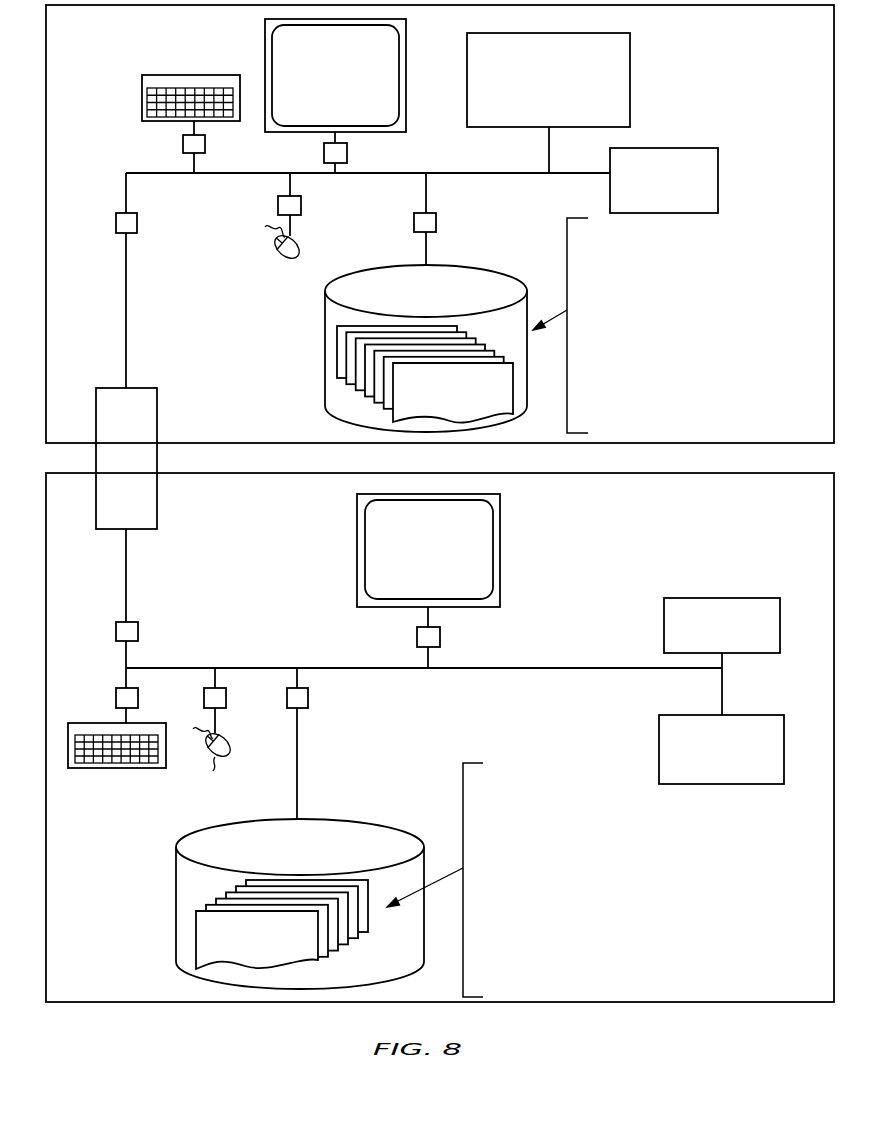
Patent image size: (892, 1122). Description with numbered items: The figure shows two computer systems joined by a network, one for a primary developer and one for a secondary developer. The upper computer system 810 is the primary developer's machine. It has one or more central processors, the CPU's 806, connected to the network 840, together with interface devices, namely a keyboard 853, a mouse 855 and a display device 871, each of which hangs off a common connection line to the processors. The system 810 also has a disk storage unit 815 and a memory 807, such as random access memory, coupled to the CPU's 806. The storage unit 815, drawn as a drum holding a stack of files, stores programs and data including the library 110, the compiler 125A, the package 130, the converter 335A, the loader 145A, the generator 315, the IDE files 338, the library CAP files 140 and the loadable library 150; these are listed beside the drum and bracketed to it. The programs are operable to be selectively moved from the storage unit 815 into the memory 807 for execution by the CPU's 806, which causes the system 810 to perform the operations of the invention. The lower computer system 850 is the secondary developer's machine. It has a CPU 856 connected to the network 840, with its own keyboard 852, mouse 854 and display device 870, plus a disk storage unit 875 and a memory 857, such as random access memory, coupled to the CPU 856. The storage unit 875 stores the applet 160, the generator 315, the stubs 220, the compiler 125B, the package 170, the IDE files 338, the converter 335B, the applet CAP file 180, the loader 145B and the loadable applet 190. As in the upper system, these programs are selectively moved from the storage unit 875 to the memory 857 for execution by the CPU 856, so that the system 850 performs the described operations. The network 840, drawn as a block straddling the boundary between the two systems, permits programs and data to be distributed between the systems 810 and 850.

The computer system 810 is at (800, 60).
The display device 871 is at (265, 40).
The keyboard 853 is at (137, 98).
The mouse 855 is at (255, 218).
The disk storage unit 815 is at (445, 278).
The central processors 806 is at (632, 82).
The memory 807 is at (678, 202).
The library 110 is at (629, 231).
The compiler 125A is at (642, 255).
The package 130 is at (633, 279).
The converter 335A is at (651, 302).
The loader 145A is at (633, 326).
The generator 315 is at (592, 574).
The IDE files 338 is at (579, 633).
The library CAP files 140 is at (674, 397).
The loadable library 150 is at (703, 421).
The computer system 850 is at (805, 976).
The network 840 is at (157, 458).
The keyboard 852 is at (117, 781).
The mouse 854 is at (215, 742).
The disk storage unit 875 is at (315, 828).
The display device 870 is at (357, 537).
The CPU 856 is at (736, 645).
The memory 857 is at (772, 756).
The applet 160 is at (518, 774).
The stubs 220 is at (551, 821).
The compiler 125B is at (535, 844).
The package 170 is at (526, 868).
The converter 335B is at (544, 916).
The applet CAP file 180 is at (557, 939).
The loader 145B is at (574, 963).
The loadable applet 190 is at (564, 986).